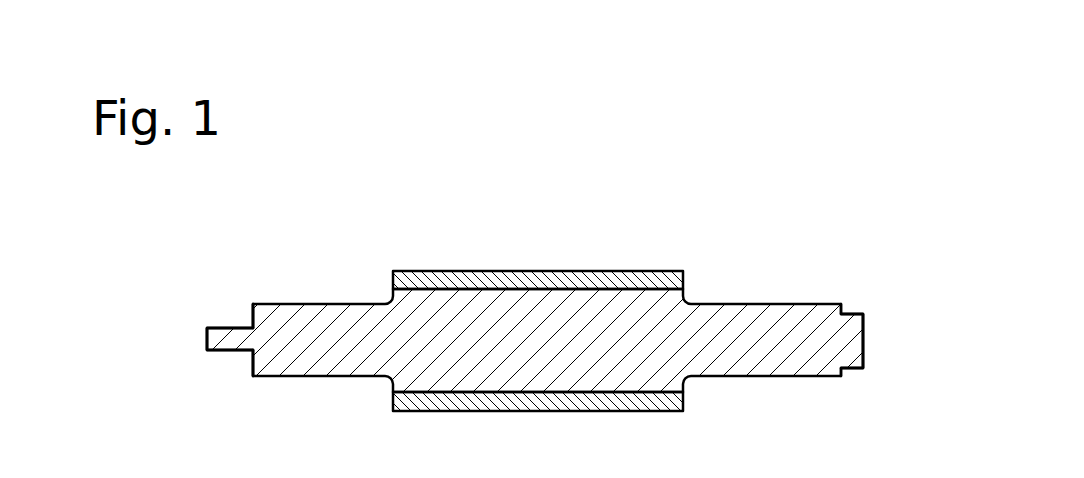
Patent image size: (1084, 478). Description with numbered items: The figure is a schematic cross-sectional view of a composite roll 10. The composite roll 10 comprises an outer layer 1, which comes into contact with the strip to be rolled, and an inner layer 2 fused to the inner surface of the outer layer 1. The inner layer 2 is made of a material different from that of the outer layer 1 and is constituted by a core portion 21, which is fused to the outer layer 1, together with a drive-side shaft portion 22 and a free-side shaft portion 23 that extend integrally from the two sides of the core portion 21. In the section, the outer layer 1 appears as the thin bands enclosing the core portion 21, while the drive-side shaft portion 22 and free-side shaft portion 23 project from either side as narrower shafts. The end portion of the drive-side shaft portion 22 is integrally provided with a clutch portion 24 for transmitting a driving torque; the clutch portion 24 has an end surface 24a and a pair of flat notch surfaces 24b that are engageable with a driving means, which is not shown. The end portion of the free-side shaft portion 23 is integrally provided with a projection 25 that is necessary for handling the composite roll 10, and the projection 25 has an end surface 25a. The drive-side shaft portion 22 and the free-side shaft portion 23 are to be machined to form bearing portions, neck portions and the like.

The composite roll 10 is at (652, 237).
The outer layer 1 is at (482, 278).
The inner layer 2 is at (345, 377).
The core portion 21 is at (546, 312).
The drive-side shaft portion 22 is at (316, 310).
The free-side shaft portion 23 is at (767, 317).
The clutch portion 24 is at (207, 326).
The end surface 24a is at (207, 340).
The flat notch surfaces 24b is at (226, 327).
The projection 25 is at (851, 323).
The end surface 25a is at (864, 336).